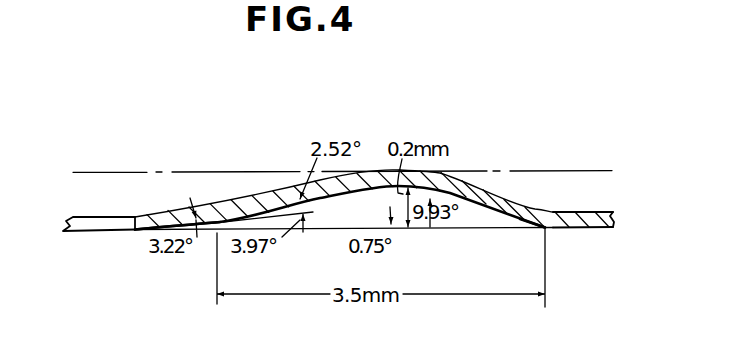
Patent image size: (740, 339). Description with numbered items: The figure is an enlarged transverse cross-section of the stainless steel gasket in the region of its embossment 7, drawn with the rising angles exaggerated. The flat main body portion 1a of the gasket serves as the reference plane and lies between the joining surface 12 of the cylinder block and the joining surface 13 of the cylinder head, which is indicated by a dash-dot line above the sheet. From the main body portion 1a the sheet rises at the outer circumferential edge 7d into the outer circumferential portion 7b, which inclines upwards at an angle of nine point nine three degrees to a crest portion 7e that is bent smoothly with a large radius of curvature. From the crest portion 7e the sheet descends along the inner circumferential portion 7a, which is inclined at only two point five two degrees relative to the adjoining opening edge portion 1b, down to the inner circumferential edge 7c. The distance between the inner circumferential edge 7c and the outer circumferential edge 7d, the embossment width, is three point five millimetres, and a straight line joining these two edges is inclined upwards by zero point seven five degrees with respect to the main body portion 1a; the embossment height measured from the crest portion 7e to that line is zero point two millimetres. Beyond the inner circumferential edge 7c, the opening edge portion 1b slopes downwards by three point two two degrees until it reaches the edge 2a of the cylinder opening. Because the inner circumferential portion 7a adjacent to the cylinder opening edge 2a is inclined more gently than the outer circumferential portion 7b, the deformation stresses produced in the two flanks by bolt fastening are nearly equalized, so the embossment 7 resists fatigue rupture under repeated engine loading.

The main body portion 1a is at (615, 229).
The opening edge portion 1b is at (167, 218).
The edge of the cylinder opening 2a is at (133, 233).
The embossment 7 is at (344, 172).
The inner circumferential portion 7a is at (260, 203).
The outer circumferential portion 7b is at (473, 192).
The inner circumferential edge 7c is at (215, 224).
The outer circumferential edge 7d is at (544, 230).
The crest portion 7e is at (437, 172).
The joining surface of the cylinder block 12 is at (590, 229).
The joining surface of the cylinder head 13 is at (550, 170).